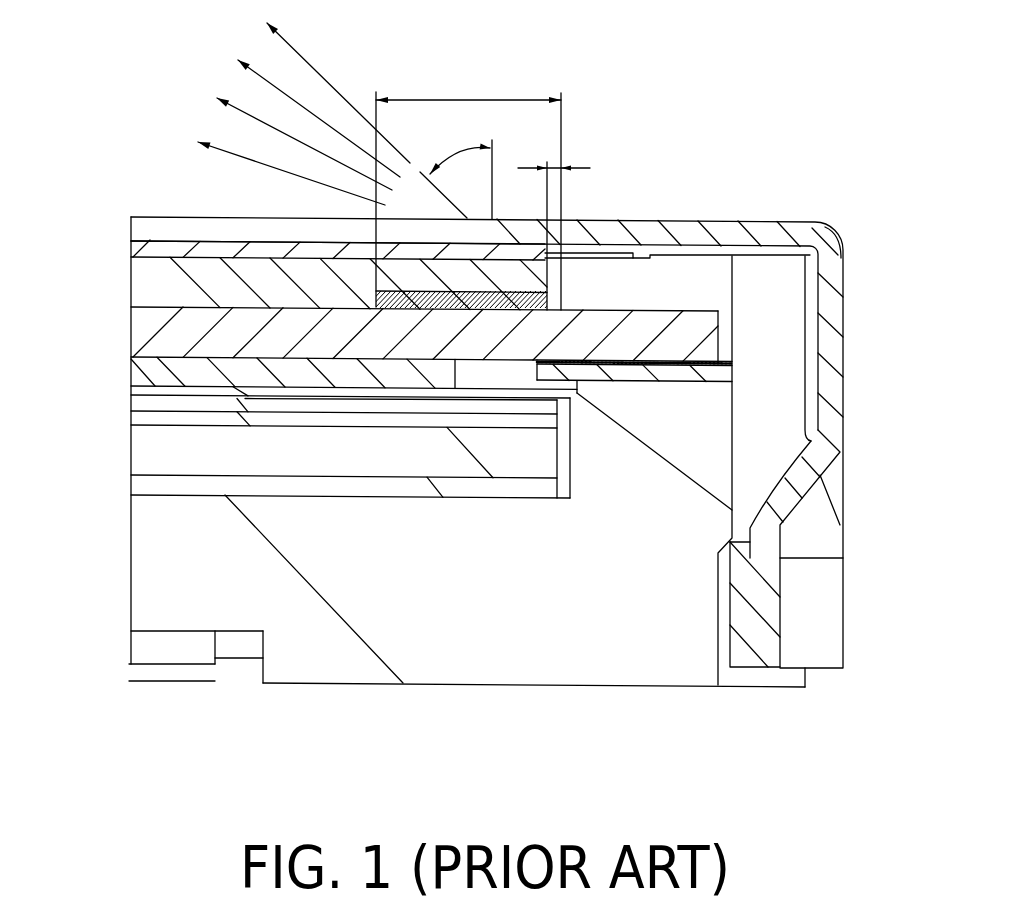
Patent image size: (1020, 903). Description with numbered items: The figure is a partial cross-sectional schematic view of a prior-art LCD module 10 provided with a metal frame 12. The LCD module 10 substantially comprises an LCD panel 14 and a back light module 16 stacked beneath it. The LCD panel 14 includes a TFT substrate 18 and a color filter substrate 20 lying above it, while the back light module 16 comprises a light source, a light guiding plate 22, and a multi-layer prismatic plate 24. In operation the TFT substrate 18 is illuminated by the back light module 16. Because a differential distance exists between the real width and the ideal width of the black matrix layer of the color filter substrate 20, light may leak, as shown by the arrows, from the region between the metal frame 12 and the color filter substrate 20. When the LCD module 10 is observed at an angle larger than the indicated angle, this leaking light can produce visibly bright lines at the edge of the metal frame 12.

The LCD module 10 is at (807, 120).
The metal frame 12 is at (832, 388).
The LCD panel 14 is at (70, 242).
The back light module 16 is at (70, 385).
The TFT substrate 18 is at (140, 330).
The color filter substrate 20 is at (158, 282).
The light guiding plate 22 is at (135, 483).
The multi-layer prismatic plate 24 is at (145, 405).